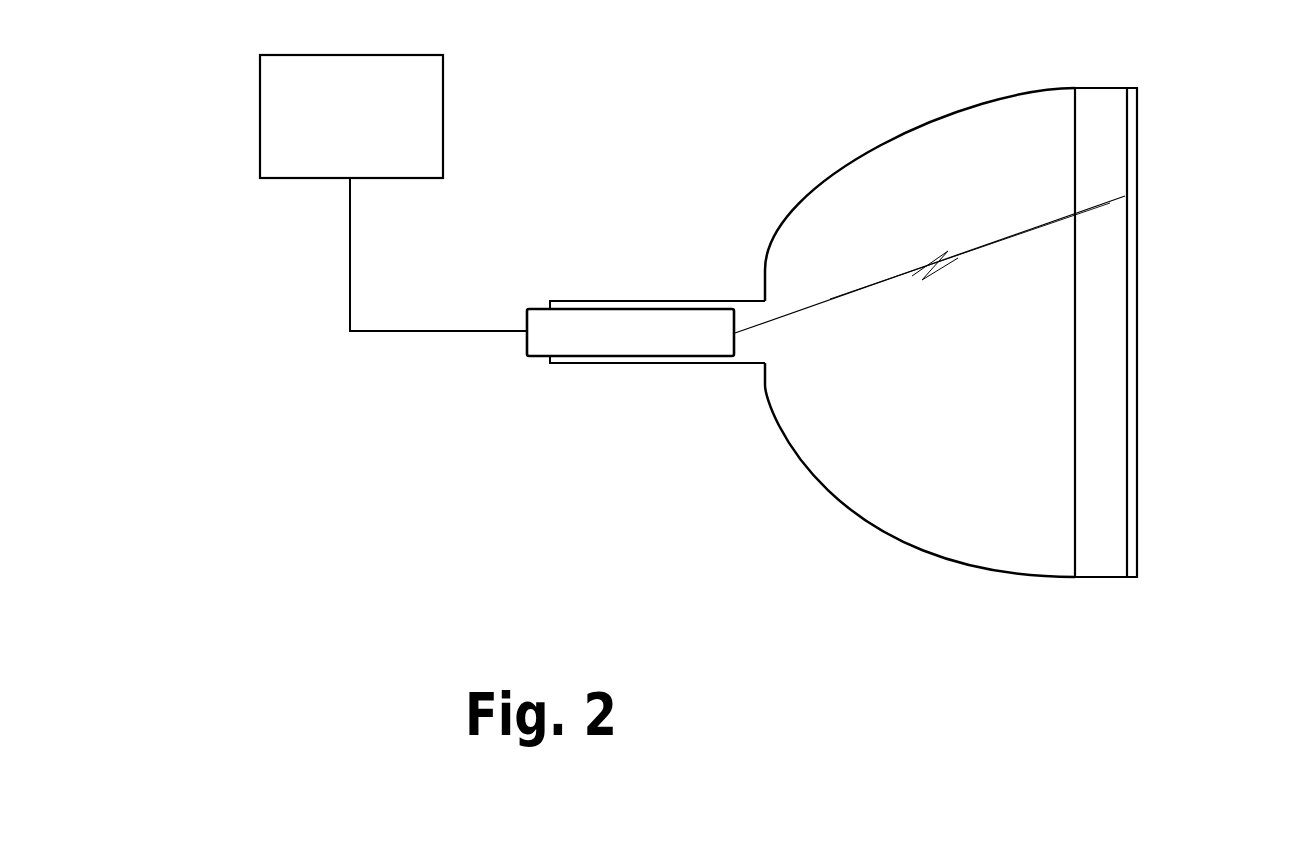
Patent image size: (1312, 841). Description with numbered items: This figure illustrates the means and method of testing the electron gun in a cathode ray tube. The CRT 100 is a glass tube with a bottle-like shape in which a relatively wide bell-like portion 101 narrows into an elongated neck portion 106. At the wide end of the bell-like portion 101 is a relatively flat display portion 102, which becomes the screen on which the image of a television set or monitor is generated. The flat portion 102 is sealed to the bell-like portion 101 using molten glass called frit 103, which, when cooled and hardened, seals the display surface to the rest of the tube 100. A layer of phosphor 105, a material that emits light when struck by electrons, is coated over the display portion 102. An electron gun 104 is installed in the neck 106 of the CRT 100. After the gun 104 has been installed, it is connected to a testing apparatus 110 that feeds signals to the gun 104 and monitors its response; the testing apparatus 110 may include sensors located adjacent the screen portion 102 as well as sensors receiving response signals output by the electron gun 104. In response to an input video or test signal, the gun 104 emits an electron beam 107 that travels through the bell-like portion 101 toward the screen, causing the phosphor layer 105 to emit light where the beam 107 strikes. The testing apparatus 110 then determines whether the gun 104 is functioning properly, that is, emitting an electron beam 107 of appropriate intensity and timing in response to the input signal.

The cathode ray tube 100 is at (725, 211).
The bell-like portion 101 is at (1018, 142).
The flat display portion 102 is at (1137, 262).
The frit 103 is at (1075, 577).
The electron gun 104 is at (630, 333).
The phosphor layer 105 is at (1130, 532).
The neck portion 106 is at (648, 302).
The electron beam 107 is at (930, 264).
The testing apparatus 110 is at (393, 193).